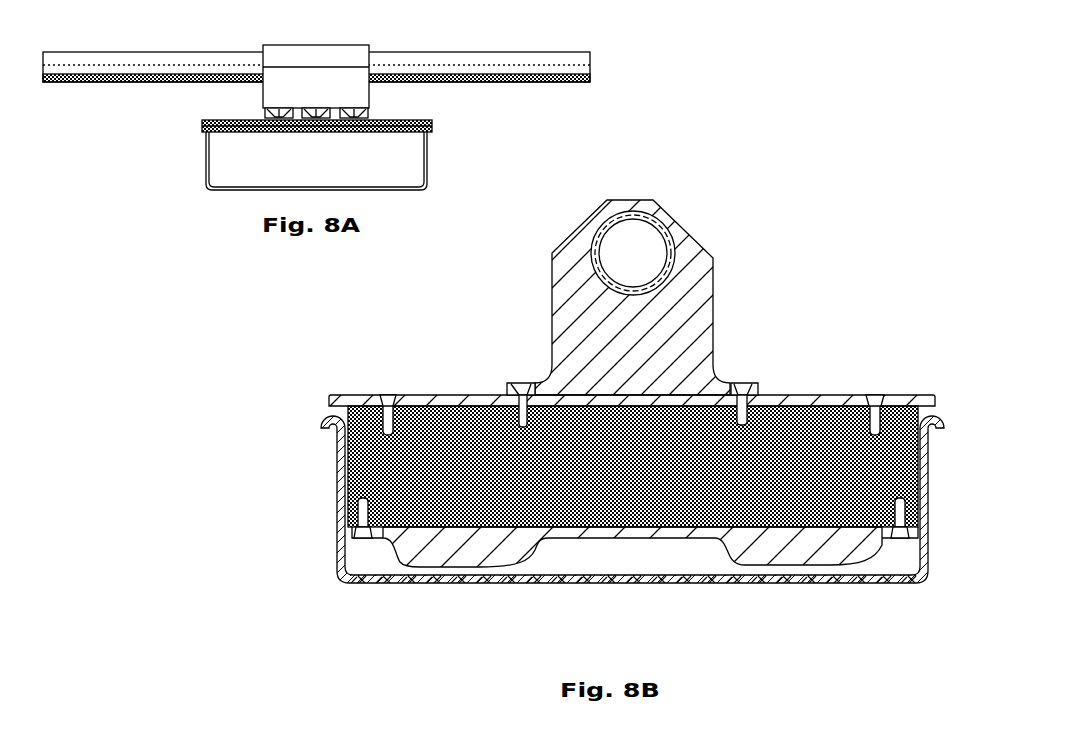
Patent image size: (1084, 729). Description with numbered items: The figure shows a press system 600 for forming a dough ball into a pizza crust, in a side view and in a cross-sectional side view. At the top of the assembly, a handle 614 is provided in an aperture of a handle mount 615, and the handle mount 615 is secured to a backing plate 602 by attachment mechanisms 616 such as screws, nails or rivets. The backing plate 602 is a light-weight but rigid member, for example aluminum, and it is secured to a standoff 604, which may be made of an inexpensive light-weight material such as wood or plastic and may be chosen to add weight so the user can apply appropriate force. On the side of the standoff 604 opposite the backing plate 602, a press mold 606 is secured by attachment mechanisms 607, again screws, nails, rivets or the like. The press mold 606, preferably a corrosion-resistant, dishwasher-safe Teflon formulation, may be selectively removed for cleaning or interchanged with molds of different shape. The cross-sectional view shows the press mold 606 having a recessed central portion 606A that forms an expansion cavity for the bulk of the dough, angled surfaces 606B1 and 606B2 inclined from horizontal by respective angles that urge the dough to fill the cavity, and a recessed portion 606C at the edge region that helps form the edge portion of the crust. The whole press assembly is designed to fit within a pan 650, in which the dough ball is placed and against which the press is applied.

In FIG. 8B, the press system 600 is at (551, 423).
In FIG. 8B, the backing plate 602 is at (872, 395).
In FIG. 8A, the standoff 604 is at (413, 156).
In FIG. 8B, the standoff 604 is at (345, 398).
In FIG. 8B, the press mold 606 is at (612, 586).
In FIG. 8B, the recessed central portion 606A is at (620, 538).
In FIG. 8B, the angled surface 606B1 is at (490, 568).
In FIG. 8B, the angled surface 606B2 is at (405, 567).
In FIG. 8B, the recessed portion 606C is at (885, 577).
In FIG. 8B, the attachment mechanisms 607 is at (340, 528).
In FIG. 8A, the handle 614 is at (450, 58).
In FIG. 8B, the handle 614 is at (668, 235).
In FIG. 8A, the handle mount 615 is at (350, 55).
In FIG. 8B, the handle mount 615 is at (664, 297).
In FIG. 8B, the attachment mechanisms 616 is at (522, 383).
In FIG. 8B, the pan 650 is at (336, 457).